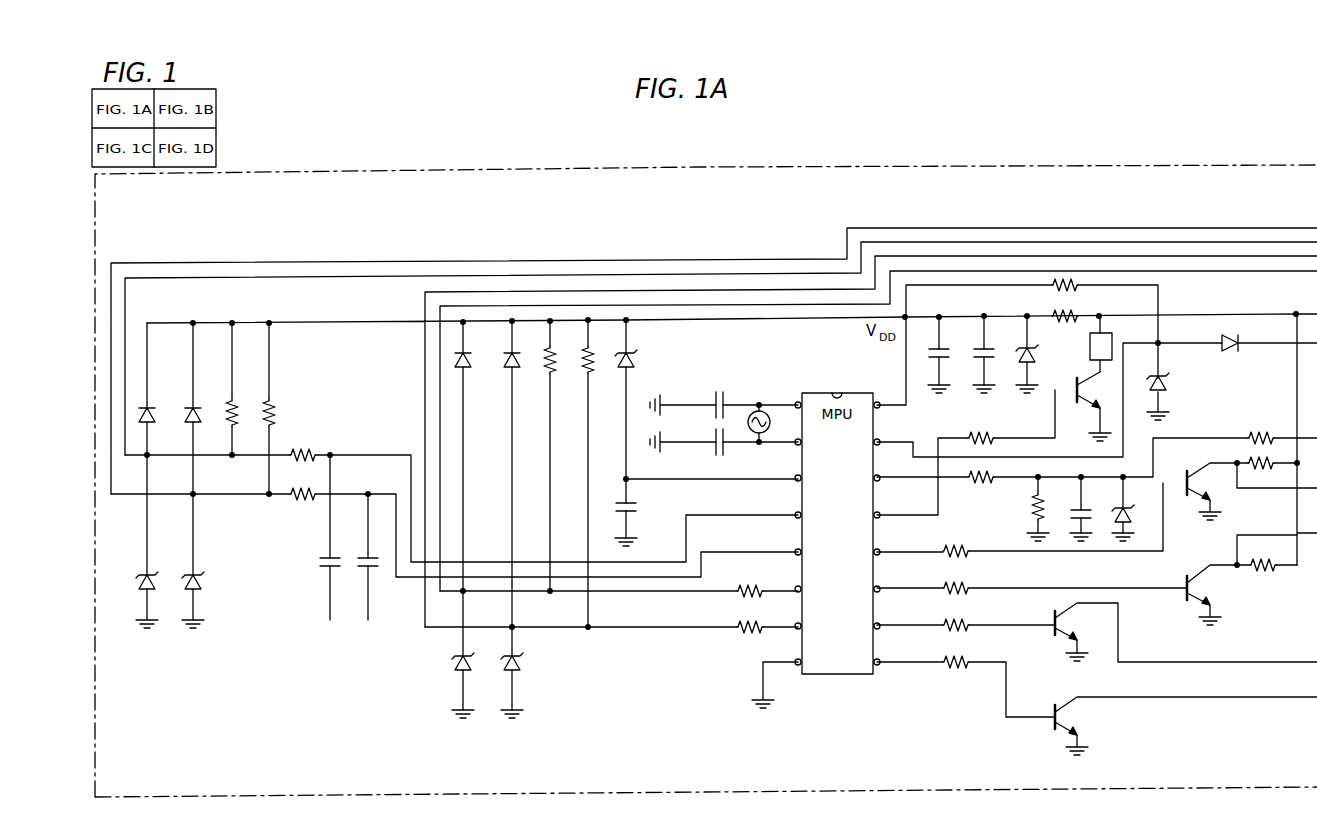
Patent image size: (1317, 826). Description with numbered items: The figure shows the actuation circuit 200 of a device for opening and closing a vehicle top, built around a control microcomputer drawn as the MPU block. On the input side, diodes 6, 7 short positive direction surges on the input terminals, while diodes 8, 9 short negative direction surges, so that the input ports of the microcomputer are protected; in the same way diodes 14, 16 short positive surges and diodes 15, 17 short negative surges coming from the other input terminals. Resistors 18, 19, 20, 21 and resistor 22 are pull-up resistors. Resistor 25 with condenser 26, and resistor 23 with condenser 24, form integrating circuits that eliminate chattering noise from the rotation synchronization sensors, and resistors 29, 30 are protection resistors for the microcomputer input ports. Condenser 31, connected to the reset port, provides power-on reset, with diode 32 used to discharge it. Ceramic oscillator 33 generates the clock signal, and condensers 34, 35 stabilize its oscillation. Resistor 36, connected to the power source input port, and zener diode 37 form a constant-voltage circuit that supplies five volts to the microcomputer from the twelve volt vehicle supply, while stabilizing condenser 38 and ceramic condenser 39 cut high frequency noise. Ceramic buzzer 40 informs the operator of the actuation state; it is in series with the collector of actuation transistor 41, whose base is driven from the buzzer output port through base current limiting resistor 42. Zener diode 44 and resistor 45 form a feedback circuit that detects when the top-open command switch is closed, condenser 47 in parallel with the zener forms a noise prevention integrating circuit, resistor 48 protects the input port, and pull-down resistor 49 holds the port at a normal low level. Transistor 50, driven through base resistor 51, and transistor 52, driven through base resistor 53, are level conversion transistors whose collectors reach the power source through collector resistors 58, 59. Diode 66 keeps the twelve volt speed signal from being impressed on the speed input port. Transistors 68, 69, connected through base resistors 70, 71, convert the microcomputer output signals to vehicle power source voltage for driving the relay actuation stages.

The actuation circuit 200 is at (629, 167).
The diode 6 is at (142, 411).
The diode 7 is at (181, 413).
The resistor 18 is at (245, 413).
The resistor 19 is at (287, 413).
The resistor 25 is at (304, 448).
The resistor 23 is at (305, 502).
The condenser 26 is at (318, 562).
The condenser 24 is at (376, 578).
The diode 8 is at (138, 581).
The diode 9 is at (185, 581).
The diode 14 is at (472, 362).
The diode 16 is at (521, 362).
The resistor 20 is at (558, 360).
The resistor 21 is at (596, 360).
The diode 32 is at (638, 358).
The diode 15 is at (456, 664).
The diode 17 is at (521, 662).
The condenser 31 is at (641, 504).
The condenser 34 is at (724, 393).
The condenser 35 is at (724, 452).
The oscillator 33 is at (768, 410).
The resistor 29 is at (744, 584).
The resistor 30 is at (742, 620).
The condenser 39 is at (930, 330).
The condenser 38 is at (976, 330).
The zener diode 37 is at (1020, 330).
The resistor 22 is at (1060, 288).
The resistor 36 is at (1070, 313).
The ceramic buzzer 40 is at (1112, 338).
The actuation transistor 41 is at (1087, 386).
The resistor 42 is at (978, 431).
The resistor 48 is at (977, 483).
The pull-down resistor 49 is at (1031, 512).
The condenser 47 is at (1068, 512).
The zener diode 44 is at (1112, 512).
The resistor 45 is at (1262, 432).
The collector resistor 58 is at (1252, 456).
The transistor 50 is at (1194, 480).
The diode 66 is at (1223, 350).
The base resistor 51 is at (950, 548).
The base resistor 53 is at (950, 586).
The transistor 52 is at (1191, 585).
The collector resistor 59 is at (1255, 562).
The base resistor 70 is at (950, 624).
The transistor 68 is at (1067, 620).
The base resistor 71 is at (950, 660).
The transistor 69 is at (1075, 717).